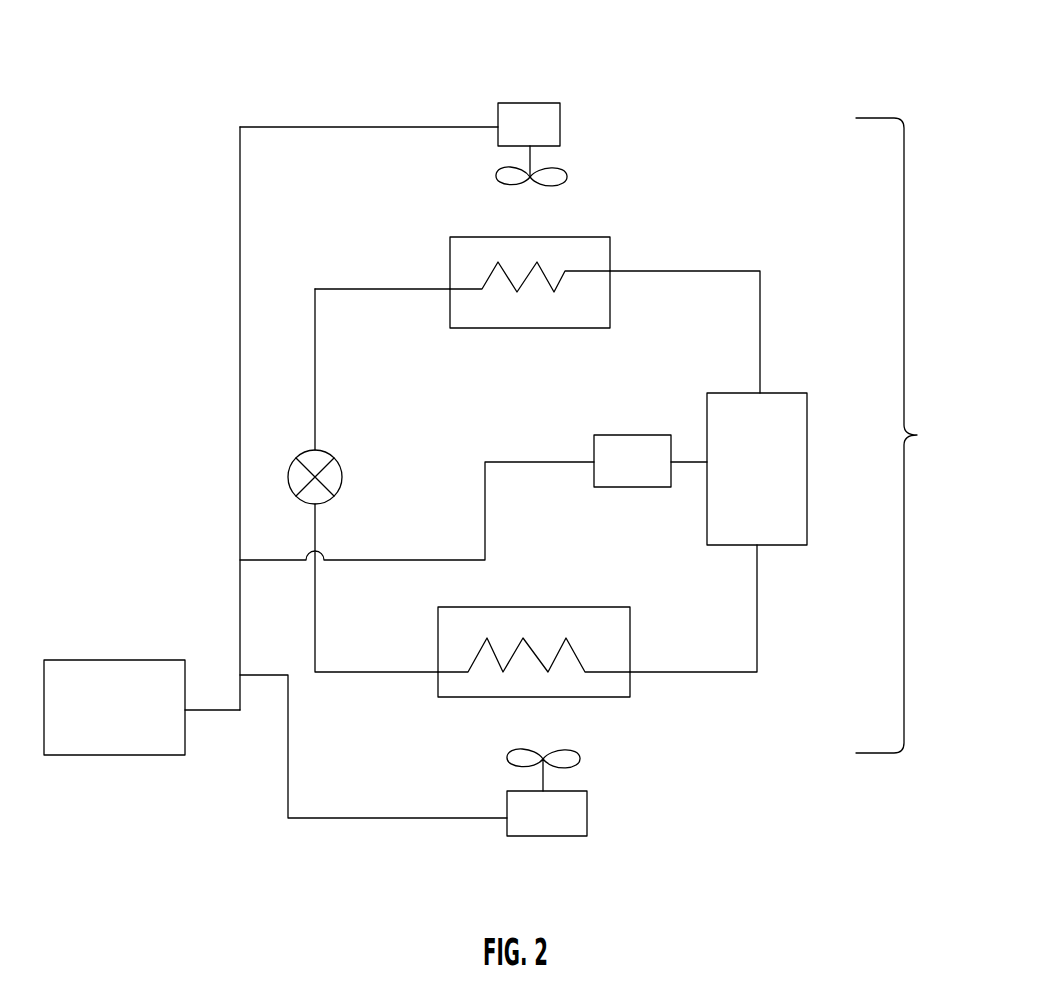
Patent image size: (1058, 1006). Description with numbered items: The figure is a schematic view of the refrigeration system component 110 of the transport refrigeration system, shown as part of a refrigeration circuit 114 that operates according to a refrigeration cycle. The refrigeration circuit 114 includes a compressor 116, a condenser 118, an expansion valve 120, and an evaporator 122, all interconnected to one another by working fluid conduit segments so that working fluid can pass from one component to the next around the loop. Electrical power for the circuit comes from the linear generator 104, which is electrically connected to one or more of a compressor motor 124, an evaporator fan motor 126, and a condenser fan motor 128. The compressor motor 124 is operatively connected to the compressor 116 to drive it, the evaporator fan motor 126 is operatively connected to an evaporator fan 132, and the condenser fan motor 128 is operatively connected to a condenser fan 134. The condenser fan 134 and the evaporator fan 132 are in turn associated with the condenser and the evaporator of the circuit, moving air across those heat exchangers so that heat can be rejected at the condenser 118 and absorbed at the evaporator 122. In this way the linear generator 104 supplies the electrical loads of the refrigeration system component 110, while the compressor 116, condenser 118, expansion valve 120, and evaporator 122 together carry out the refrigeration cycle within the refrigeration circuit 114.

The linear generator 104 is at (130, 722).
The refrigeration system component 110 is at (908, 435).
The refrigeration circuit 114 is at (417, 367).
The compressor 116 is at (773, 482).
The condenser 118 is at (528, 607).
The expansion valve 120 is at (344, 474).
The evaporator 122 is at (573, 237).
The compressor motor 124 is at (640, 435).
The evaporator fan motor 126 is at (587, 815).
The condenser fan motor 128 is at (545, 103).
The evaporator fan 132 is at (580, 753).
The condenser fan 134 is at (562, 173).